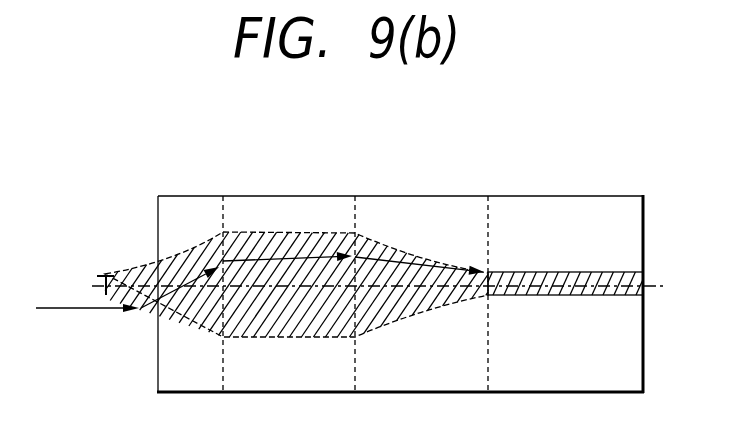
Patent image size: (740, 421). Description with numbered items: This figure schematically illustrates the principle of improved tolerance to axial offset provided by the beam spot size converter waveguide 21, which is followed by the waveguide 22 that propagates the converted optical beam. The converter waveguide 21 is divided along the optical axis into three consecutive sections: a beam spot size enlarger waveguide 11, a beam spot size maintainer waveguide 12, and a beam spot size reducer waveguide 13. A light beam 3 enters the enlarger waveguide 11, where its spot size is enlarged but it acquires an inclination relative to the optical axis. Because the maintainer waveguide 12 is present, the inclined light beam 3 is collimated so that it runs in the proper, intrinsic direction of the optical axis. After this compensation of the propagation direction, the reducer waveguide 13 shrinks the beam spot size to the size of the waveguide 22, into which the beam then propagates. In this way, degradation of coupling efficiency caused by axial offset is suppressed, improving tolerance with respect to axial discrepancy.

The light beam 3 is at (75, 312).
The beam spot size enlarger waveguide 11 is at (222, 190).
The beam spot size maintainer waveguide 12 is at (355, 190).
The beam spot size reducer waveguide 13 is at (487, 190).
The beam spot size converter waveguide 21 is at (488, 125).
The waveguide 22 is at (642, 125).